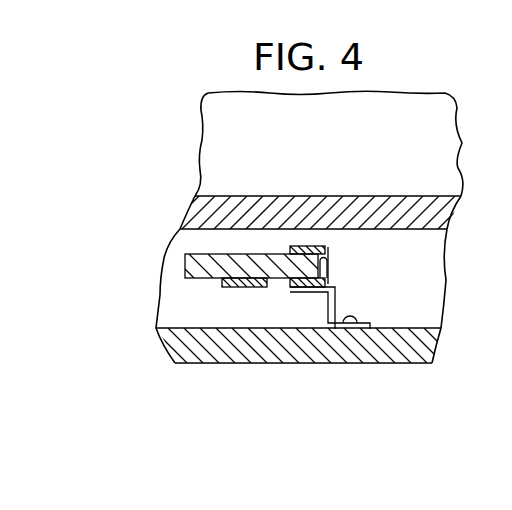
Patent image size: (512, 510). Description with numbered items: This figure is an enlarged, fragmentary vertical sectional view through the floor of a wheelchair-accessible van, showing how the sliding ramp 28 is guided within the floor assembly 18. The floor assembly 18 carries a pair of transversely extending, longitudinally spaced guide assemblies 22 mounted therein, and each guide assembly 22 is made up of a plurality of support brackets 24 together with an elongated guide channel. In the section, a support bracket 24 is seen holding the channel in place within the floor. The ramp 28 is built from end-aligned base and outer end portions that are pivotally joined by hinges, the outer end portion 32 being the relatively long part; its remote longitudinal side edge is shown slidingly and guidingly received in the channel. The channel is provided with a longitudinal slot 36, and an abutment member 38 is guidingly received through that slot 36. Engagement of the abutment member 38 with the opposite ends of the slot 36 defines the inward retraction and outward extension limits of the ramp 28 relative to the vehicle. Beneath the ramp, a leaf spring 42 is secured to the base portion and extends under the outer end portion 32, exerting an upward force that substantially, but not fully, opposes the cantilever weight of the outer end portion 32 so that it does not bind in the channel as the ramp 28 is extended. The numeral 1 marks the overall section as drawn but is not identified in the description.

The device / housing 1 is at (316, 227).
The floor assembly 18 is at (267, 195).
The guide assembly 22 is at (309, 246).
The support bracket 24 is at (327, 302).
The ramp 28 is at (250, 241).
The outer end portion 32 is at (190, 266).
The longitudinal slot 36 is at (331, 283).
The abutment member 38 is at (333, 263).
The leaf spring 42 is at (232, 288).